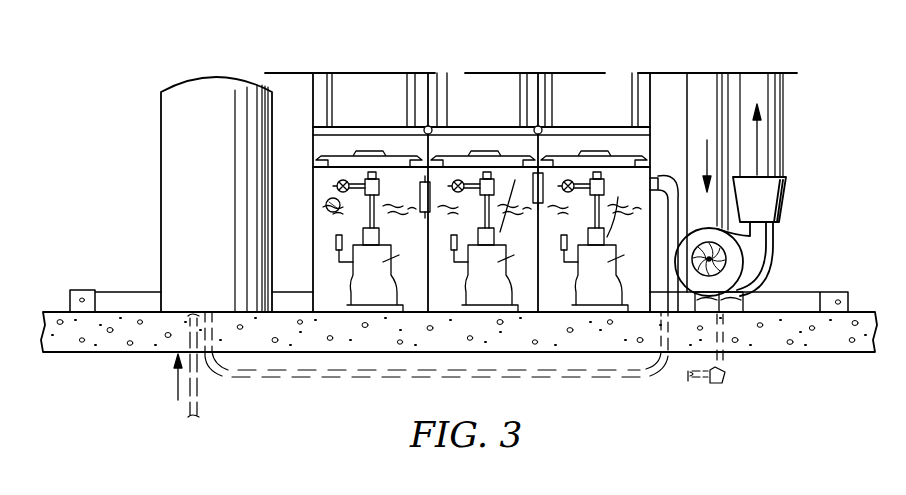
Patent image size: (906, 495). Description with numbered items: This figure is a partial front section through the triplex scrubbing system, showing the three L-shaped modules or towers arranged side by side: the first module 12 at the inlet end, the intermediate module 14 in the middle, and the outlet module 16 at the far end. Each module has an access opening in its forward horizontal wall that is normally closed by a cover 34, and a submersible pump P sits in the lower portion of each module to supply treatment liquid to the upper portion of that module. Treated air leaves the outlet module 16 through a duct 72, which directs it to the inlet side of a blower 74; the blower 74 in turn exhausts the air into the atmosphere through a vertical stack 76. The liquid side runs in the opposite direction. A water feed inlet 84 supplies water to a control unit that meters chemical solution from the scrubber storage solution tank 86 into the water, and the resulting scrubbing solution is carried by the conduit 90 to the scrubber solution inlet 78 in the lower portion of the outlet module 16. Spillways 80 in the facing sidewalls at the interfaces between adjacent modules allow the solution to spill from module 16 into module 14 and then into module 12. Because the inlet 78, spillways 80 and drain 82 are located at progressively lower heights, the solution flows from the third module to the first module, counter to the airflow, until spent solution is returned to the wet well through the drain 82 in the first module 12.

The first module 12 is at (372, 68).
The intermediate module 14 is at (495, 68).
The outlet module 16 is at (597, 68).
The cover 34 is at (330, 157).
The duct 72 is at (689, 73).
The blower 74 is at (760, 272).
The vertical stack 76 is at (778, 100).
The scrubber solution inlet 78 is at (655, 182).
The spillways 80 is at (377, 263).
The drain 82 is at (326, 204).
The water feed inlet 84 is at (200, 378).
The scrubber storage solution tank 86 is at (161, 180).
The conduit 90 is at (366, 378).